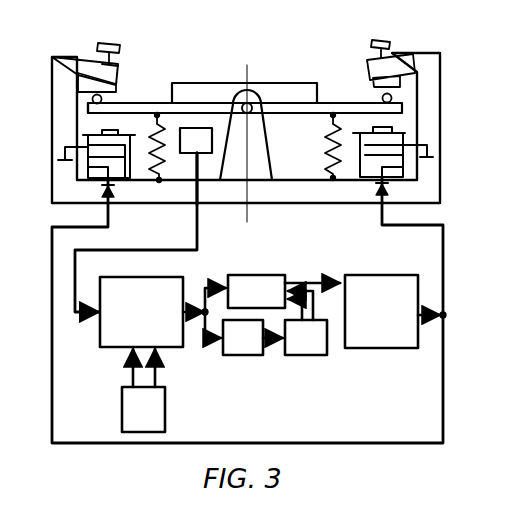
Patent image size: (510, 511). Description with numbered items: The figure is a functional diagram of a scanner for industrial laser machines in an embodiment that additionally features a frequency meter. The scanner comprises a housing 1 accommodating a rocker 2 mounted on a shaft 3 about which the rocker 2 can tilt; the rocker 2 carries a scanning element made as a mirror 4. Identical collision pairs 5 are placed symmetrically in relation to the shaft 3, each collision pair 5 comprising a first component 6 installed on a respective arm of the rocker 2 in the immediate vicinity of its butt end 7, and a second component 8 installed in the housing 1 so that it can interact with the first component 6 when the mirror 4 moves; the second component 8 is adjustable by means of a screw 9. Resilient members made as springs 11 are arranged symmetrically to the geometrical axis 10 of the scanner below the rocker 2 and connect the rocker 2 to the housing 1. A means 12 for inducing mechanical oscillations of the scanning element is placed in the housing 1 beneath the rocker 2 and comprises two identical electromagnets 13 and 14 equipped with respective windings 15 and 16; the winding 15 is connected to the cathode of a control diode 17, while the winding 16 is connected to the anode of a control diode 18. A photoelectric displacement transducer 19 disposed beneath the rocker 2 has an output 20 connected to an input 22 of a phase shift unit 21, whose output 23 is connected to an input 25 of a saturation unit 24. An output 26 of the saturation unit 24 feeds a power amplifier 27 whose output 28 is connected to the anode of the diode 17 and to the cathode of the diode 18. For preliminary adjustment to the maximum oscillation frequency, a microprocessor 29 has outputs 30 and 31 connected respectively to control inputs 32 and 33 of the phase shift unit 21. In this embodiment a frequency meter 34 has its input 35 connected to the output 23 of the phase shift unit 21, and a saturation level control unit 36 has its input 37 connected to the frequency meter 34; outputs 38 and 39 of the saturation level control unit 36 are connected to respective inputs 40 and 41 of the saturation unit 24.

The housing 1 is at (53, 89).
The rocker 2 is at (118, 108).
The shaft 3 is at (253, 110).
The mirror 4 is at (217, 93).
The collision pair 5 is at (77, 72).
The first component 6 is at (94, 97).
The butt end 7 is at (88, 108).
The second component 8 is at (100, 72).
The screw 9 is at (103, 35).
The geometrical axis 10 is at (249, 210).
The spring 11 is at (172, 185).
The means for inducing mechanical oscillations 12 is at (131, 122).
The electromagnet 13 is at (128, 152).
The electromagnet 14 is at (362, 152).
The winding 15 is at (125, 158).
The winding 16 is at (375, 157).
The control diode 17 is at (102, 191).
The control diode 18 is at (390, 188).
The photoelectric displacement transducer 19 is at (193, 128).
The output 20 is at (200, 165).
The phase shift unit 21 is at (141, 312).
The input 22 is at (78, 318).
The output 23 is at (190, 306).
The saturation unit 24 is at (256, 291).
The input 25 is at (220, 286).
The output 26 is at (290, 282).
The power amplifier 27 is at (381, 311).
The output 28 is at (425, 320).
The microprocessor 29 is at (143, 409).
The output 30 is at (127, 380).
The output 31 is at (160, 380).
The control input 32 is at (120, 357).
The control input 33 is at (160, 355).
The frequency meter 34 is at (243, 337).
The input 35 is at (221, 350).
The saturation level control unit 36 is at (306, 337).
The input 37 is at (280, 345).
The output 38 is at (318, 300).
The output 39 is at (323, 300).
The input 40 is at (322, 276).
The input 41 is at (302, 290).